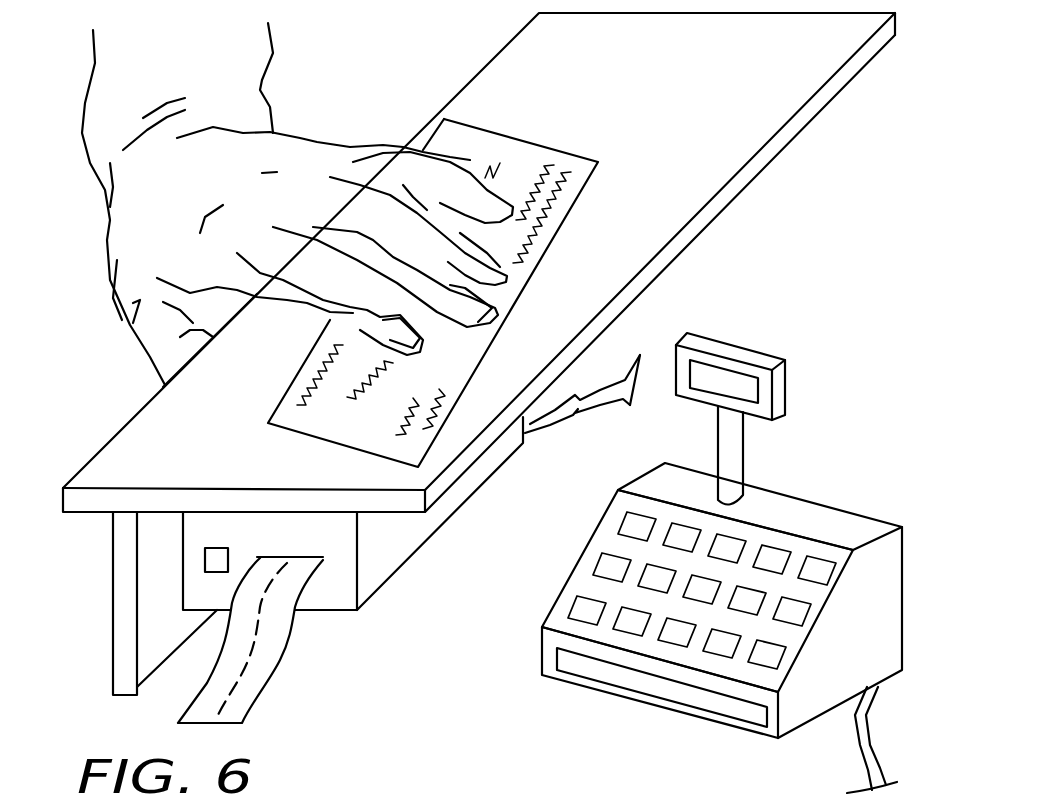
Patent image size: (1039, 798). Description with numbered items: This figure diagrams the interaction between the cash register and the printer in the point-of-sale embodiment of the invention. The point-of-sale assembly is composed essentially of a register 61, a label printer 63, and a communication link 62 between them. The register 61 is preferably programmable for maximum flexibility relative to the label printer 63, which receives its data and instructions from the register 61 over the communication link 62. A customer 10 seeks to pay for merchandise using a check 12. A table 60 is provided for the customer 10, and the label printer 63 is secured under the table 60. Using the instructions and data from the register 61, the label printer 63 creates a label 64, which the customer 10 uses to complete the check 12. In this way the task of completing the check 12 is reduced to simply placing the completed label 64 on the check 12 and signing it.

The customer 10 is at (267, 158).
The check 12 is at (557, 147).
The table 60 is at (513, 72).
The register 61 is at (852, 510).
The communication link 62 is at (605, 410).
The label printer 63 is at (340, 612).
The label 64 is at (250, 710).